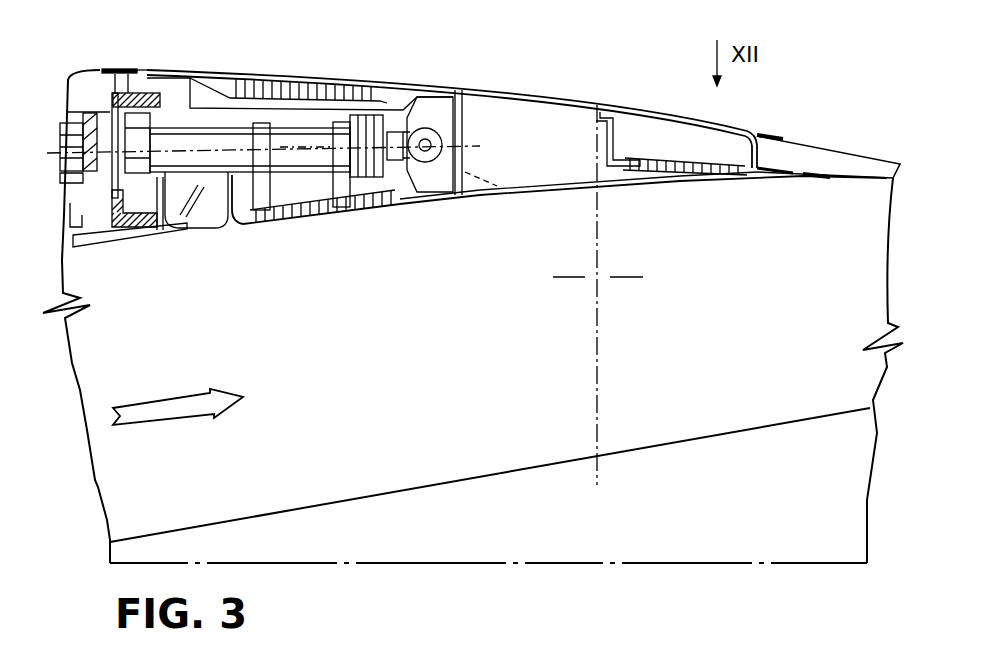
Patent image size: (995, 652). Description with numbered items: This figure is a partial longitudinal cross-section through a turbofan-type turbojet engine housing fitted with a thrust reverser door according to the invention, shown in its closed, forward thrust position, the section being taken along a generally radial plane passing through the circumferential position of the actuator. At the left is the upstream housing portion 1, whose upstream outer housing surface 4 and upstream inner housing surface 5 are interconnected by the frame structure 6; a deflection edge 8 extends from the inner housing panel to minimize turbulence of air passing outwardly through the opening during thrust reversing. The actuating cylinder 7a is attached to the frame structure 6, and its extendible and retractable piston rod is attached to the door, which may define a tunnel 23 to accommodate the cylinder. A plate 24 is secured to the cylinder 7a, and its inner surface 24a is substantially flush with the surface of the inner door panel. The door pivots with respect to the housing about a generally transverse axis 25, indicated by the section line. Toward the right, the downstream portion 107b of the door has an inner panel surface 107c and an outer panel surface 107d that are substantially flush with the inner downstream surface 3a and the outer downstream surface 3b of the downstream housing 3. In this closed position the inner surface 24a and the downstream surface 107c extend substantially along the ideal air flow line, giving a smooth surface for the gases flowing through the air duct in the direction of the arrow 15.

The upstream housing portion 1 is at (133, 68).
The upstream outer housing surface 4 is at (103, 68).
The upstream inner housing surface 5 is at (117, 240).
The frame structure 6 is at (148, 222).
The actuating cylinder 7a is at (190, 150).
The deflection edge 8 is at (222, 205).
The airflow direction 15 is at (173, 408).
The tunnel 23 is at (412, 177).
The plate 24 is at (337, 200).
The inner surface 24a is at (291, 222).
The transverse axis 25 is at (596, 278).
The downstream housing 3 is at (828, 157).
The downstream inner housing surface 3a is at (815, 179).
The downstream outer housing surface 3b is at (775, 136).
The downstream portion 107b is at (655, 138).
The inner panel surface 107c is at (704, 178).
The outer panel surface 107d is at (641, 110).